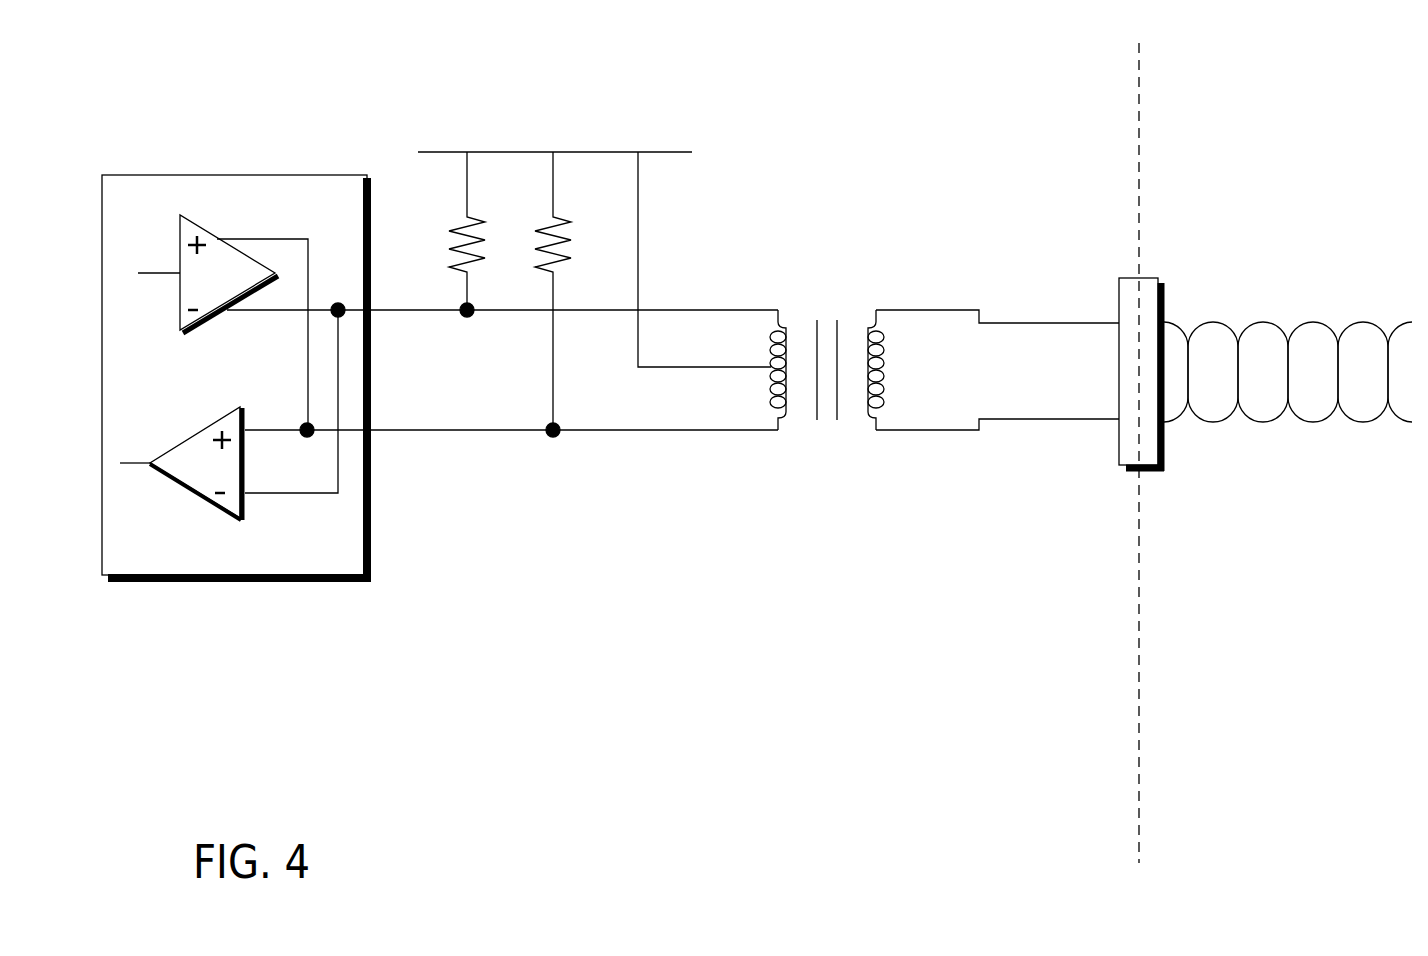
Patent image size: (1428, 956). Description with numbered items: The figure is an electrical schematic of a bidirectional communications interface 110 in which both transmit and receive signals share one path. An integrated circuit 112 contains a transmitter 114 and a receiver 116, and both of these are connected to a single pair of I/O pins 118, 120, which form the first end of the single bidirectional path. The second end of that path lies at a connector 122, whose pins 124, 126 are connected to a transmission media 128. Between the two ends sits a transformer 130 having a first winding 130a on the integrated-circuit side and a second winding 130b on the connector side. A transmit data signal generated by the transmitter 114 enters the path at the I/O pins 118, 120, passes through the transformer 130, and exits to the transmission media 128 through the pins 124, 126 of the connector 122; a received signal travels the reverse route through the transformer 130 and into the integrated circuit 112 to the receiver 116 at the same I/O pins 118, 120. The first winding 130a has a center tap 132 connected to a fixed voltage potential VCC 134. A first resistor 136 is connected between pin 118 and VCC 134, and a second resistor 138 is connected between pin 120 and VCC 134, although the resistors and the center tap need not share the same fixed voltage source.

The bidirectional communications interface 110 is at (1048, 92).
The integrated circuit 112 is at (247, 578).
The transmitter 114 is at (197, 225).
The receiver 116 is at (195, 433).
The I/O pin 118 is at (370, 312).
The I/O pin 120 is at (372, 427).
The connector 122 is at (1119, 460).
The pin 124 is at (1119, 323).
The pin 126 is at (1119, 419).
The transmission media 128 is at (1320, 322).
The transformer 130 is at (790, 394).
The first winding 130a is at (781, 313).
The second winding 130b is at (869, 313).
The center tap 132 is at (710, 368).
The VCC 134 is at (625, 152).
The first resistor 136 is at (467, 195).
The second resistor 138 is at (553, 195).